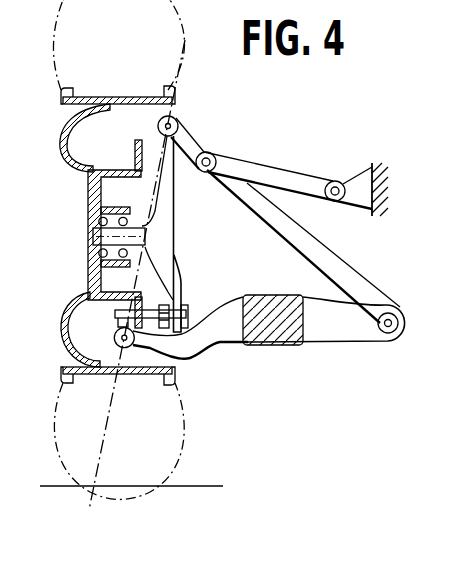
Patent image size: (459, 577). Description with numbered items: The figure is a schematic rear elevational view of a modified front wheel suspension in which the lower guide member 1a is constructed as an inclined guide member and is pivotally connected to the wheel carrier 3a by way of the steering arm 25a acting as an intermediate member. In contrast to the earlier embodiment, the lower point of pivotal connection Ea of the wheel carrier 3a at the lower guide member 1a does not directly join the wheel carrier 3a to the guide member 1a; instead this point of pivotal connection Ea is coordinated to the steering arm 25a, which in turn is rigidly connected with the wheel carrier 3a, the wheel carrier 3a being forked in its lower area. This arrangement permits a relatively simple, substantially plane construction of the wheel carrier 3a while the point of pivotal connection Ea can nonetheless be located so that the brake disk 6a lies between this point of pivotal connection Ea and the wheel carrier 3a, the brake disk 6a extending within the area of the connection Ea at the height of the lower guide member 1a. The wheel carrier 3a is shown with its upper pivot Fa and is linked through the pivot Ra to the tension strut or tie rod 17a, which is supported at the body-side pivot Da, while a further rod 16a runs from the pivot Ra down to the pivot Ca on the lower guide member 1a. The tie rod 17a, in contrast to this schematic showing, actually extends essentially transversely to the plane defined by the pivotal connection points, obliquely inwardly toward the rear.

The lower guide member 1a is at (222, 343).
The wheel carrier 3a is at (174, 220).
The brake disk 6a is at (134, 151).
The connecting rod 16a is at (328, 253).
The tension strut or tie rod 17a is at (277, 172).
The steering arm 25a is at (153, 310).
The upper pivot point of wheel carrier Fa is at (176, 120).
The pivot point between upper arm and rod Ra is at (208, 173).
The body-side pivot of upper arm Da is at (339, 182).
The pivot point between rod and lower arm Ca is at (392, 313).
The lower point of pivotal connection Ea is at (114, 337).